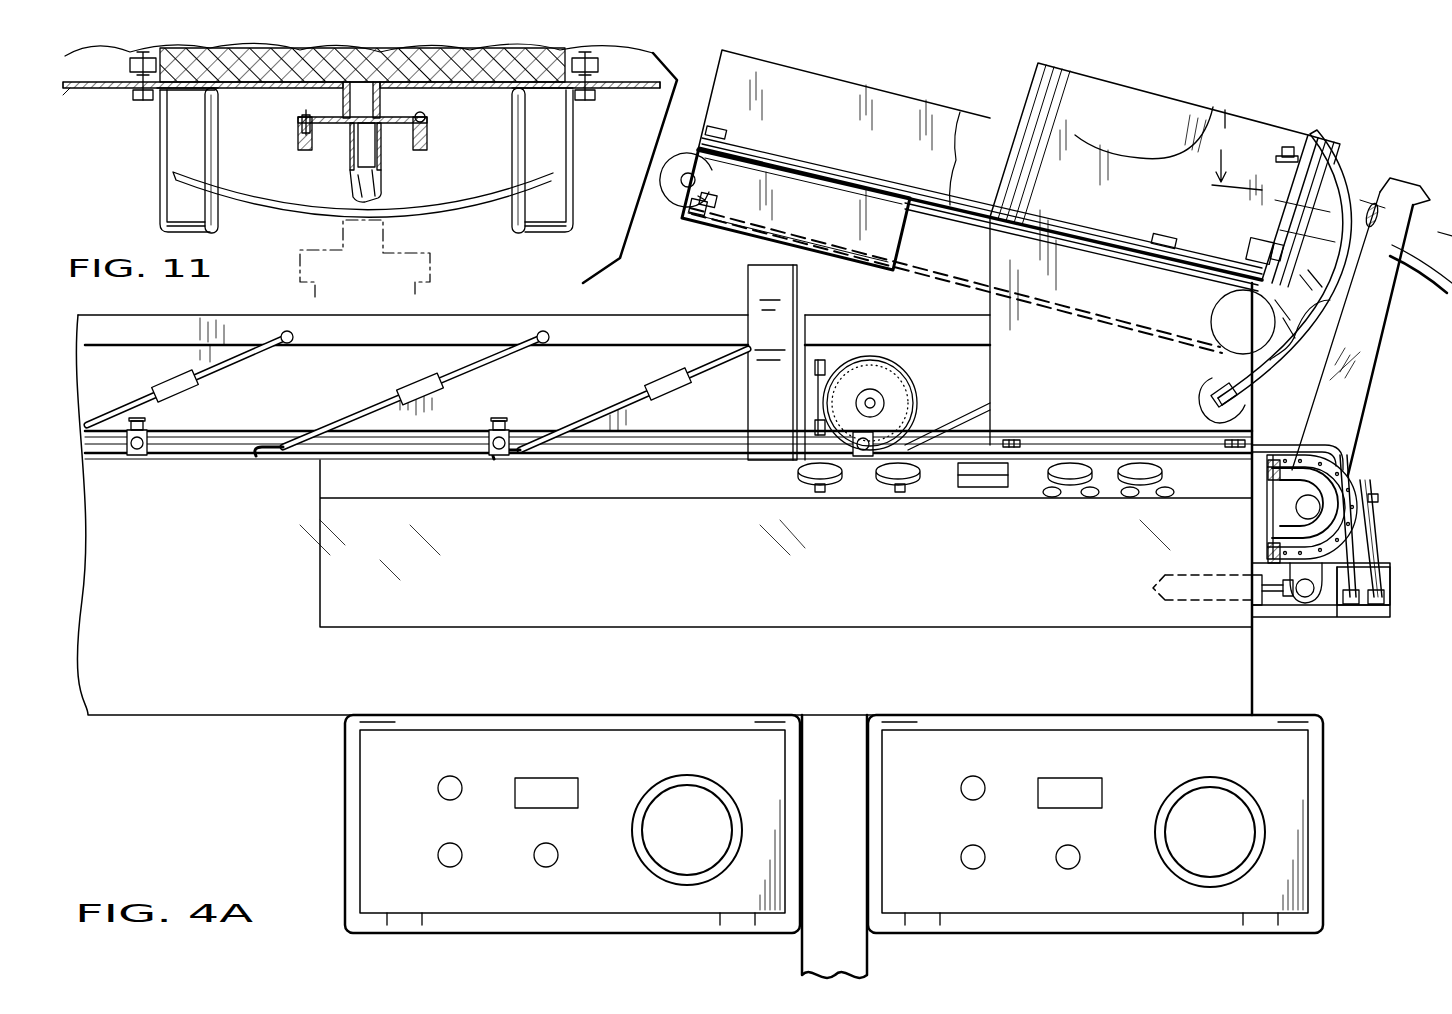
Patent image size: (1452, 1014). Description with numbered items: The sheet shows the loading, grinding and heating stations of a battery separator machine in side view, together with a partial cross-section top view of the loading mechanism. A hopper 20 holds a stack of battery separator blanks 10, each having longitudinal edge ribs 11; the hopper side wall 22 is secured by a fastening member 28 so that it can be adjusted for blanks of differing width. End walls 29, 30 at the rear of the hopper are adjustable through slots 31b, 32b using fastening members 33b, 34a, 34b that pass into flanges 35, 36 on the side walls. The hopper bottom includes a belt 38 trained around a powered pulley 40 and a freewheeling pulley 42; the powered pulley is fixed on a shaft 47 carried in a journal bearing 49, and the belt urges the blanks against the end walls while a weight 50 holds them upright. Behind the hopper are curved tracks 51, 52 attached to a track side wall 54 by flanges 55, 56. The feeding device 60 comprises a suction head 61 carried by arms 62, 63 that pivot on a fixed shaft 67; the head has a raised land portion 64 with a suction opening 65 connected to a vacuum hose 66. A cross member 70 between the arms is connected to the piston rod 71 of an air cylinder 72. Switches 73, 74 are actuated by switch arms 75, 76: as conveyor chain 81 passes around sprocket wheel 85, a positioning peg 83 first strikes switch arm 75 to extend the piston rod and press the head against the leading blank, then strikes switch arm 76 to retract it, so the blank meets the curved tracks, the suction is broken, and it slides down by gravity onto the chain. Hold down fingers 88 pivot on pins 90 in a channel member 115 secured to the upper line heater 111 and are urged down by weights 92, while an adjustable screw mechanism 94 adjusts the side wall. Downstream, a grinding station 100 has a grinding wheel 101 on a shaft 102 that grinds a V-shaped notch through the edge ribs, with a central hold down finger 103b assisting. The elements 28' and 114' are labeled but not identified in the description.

In FIG. 11, the battery separator blank 10 is at (475, 72).
In FIG. 4A, the battery separator blank 10 is at (1118, 116).
In FIG. 4A, the longitudinal edge rib 11 is at (1332, 192).
In FIG. 4A, the hopper 20 is at (986, 98).
In FIG. 4A, the hopper side wall 22 is at (1228, 106).
In FIG. 4A, the fastening member 28 is at (1165, 230).
In FIG. 4A, the fastener 28' is at (967, 181).
In FIG. 11, the end wall 29 is at (625, 95).
In FIG. 11, the end wall 30 is at (70, 88).
In FIG. 4A, the end wall 30 is at (1296, 140).
In FIG. 11, the slot 31b is at (592, 92).
In FIG. 11, the slot 32b is at (133, 92).
In FIG. 11, the fastening member 33b is at (578, 96).
In FIG. 4A, the fastening member 34a is at (1270, 240).
In FIG. 11, the fastening member 34b is at (160, 95).
In FIG. 4A, the fastening member 34b is at (1338, 123).
In FIG. 11, the flange 35 is at (632, 88).
In FIG. 11, the flange 36 is at (88, 88).
In FIG. 4A, the flange 36 is at (1288, 145).
In FIG. 4A, the belt 38 is at (960, 212).
In FIG. 4A, the powered pulley 40 is at (690, 205).
In FIG. 4A, the freewheeling pulley 42 is at (1268, 350).
In FIG. 4A, the shaft 47 is at (692, 166).
In FIG. 4A, the journal bearing 49 is at (702, 212).
In FIG. 4A, the weight 50 is at (1040, 112).
In FIG. 11, the curved track 51 is at (512, 157).
In FIG. 11, the curved track 52 is at (218, 125).
In FIG. 4A, the curved track 52 is at (1335, 150).
In FIG. 11, the track side wall 54 is at (160, 160).
In FIG. 4A, the track side wall 54 is at (1310, 240).
In FIG. 11, the flange 55 is at (555, 158).
In FIG. 11, the flange 56 is at (175, 190).
In FIG. 11, the battery separator feeding device 60 is at (445, 122).
In FIG. 11, the suction head 61 is at (343, 98).
In FIG. 4A, the suction head 61 is at (1405, 190).
In FIG. 11, the arm 62 is at (427, 136).
In FIG. 11, the arm 63 is at (305, 150).
In FIG. 4A, the arm 63 is at (1345, 398).
In FIG. 11, the raised land portion 64 is at (382, 100).
In FIG. 4A, the raised land portion 64 is at (1388, 180).
In FIG. 11, the suction opening 65 is at (312, 128).
In FIG. 4A, the suction opening 65 is at (1370, 204).
In FIG. 11, the vacuum hose 66 is at (382, 183).
In FIG. 4A, the vacuum hose 66 is at (1433, 270).
In FIG. 4A, the fixed shaft 67 is at (1316, 504).
In FIG. 4A, the cross member 70 is at (1305, 600).
In FIG. 4A, the piston rod 71 is at (1274, 597).
In FIG. 4A, the air cylinder 72 is at (1228, 605).
In FIG. 4A, the switch 73 is at (1390, 570).
In FIG. 4A, the switch 74 is at (1350, 608).
In FIG. 4A, the switch arm 75 is at (1376, 548).
In FIG. 4A, the switch arm 76 is at (1285, 445).
In FIG. 4A, the conveyor chain 81 is at (1374, 520).
In FIG. 4A, the positioning peg 83 is at (1030, 434).
In FIG. 4A, the sprocket wheel 85 is at (1345, 470).
In FIG. 4A, the hold down finger 88 is at (272, 335).
In FIG. 4A, the pin 90 is at (291, 330).
In FIG. 4A, the weight 92 is at (175, 378).
In FIG. 4A, the adjustable screw mechanism 94 is at (147, 432).
In FIG. 4A, the grinding station 100 is at (925, 372).
In FIG. 4A, the grinding wheel 101 is at (915, 395).
In FIG. 4A, the shaft 102 is at (868, 398).
In FIG. 4A, the central hold down finger 103b is at (926, 430).
In FIG. 4A, the upper line heater 111 is at (612, 365).
In FIG. 4A, the post 114' is at (756, 356).
In FIG. 4A, the channel member 115 is at (98, 328).